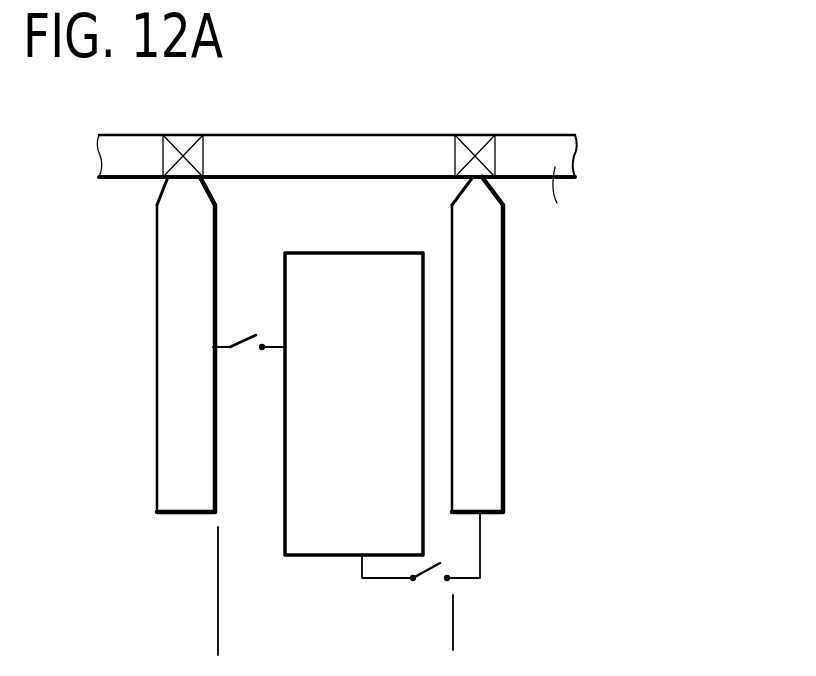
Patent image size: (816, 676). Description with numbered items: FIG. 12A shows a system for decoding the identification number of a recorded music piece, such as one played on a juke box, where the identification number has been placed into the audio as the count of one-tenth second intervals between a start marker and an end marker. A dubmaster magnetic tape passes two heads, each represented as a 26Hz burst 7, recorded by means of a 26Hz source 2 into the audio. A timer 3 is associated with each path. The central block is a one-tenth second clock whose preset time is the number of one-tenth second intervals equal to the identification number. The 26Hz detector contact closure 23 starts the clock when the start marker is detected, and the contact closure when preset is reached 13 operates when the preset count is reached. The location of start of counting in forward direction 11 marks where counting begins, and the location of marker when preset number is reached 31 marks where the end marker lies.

The 26Hz burst 7 is at (166, 178).
The 26Hz source 2 is at (150, 274).
The timer 3 is at (167, 355).
The 26Hz detector contact closure 23 is at (256, 350).
The contact closure when preset is reached 13 is at (432, 572).
The location of start of counting in forward direction 11 is at (218, 633).
The location of marker when preset number is reached 31 is at (453, 633).